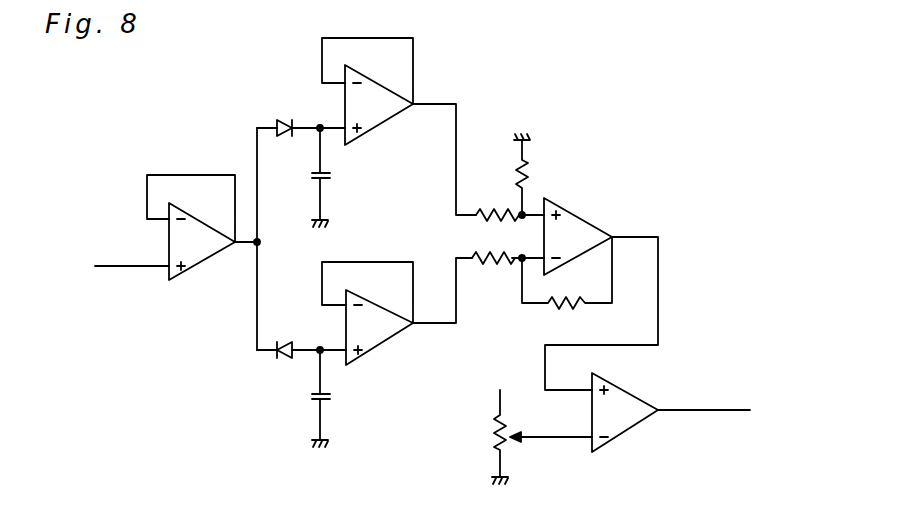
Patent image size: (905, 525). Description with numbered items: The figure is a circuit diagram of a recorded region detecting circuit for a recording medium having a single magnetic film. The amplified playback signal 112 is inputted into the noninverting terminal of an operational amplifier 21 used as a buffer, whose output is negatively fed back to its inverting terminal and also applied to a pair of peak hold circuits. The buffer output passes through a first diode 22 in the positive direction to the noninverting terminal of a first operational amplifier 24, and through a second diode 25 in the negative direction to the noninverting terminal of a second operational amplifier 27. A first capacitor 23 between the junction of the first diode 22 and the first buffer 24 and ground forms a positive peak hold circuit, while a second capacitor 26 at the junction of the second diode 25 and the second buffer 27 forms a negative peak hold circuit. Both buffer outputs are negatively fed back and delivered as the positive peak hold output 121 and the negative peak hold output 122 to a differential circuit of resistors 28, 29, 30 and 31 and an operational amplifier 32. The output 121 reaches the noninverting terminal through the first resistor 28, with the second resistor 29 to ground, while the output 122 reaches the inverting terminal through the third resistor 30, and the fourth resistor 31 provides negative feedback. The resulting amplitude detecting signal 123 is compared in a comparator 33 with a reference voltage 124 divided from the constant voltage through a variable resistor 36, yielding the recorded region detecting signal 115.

The operational amplifier 21 is at (198, 266).
The first diode 22 is at (282, 118).
The first capacitor 23 is at (333, 175).
The first operational amplifier 24 is at (380, 88).
The second diode 25 is at (283, 362).
The second capacitor 26 is at (335, 397).
The second operational amplifier 27 is at (385, 345).
The first resistor 28 is at (500, 208).
The second resistor 29 is at (527, 168).
The third resistor 30 is at (495, 265).
The fourth resistor 31 is at (568, 305).
The operational amplifier 32 is at (590, 222).
The comparator 33 is at (630, 390).
The variable resistor 36 is at (495, 425).
The playback signal 112 is at (108, 266).
The recorded region detecting signal 115 is at (708, 410).
The positive peak hold output 121 is at (457, 115).
The negative peak hold output 122 is at (458, 258).
The amplitude detecting signal 123 is at (658, 275).
The reference voltage 124 is at (555, 437).